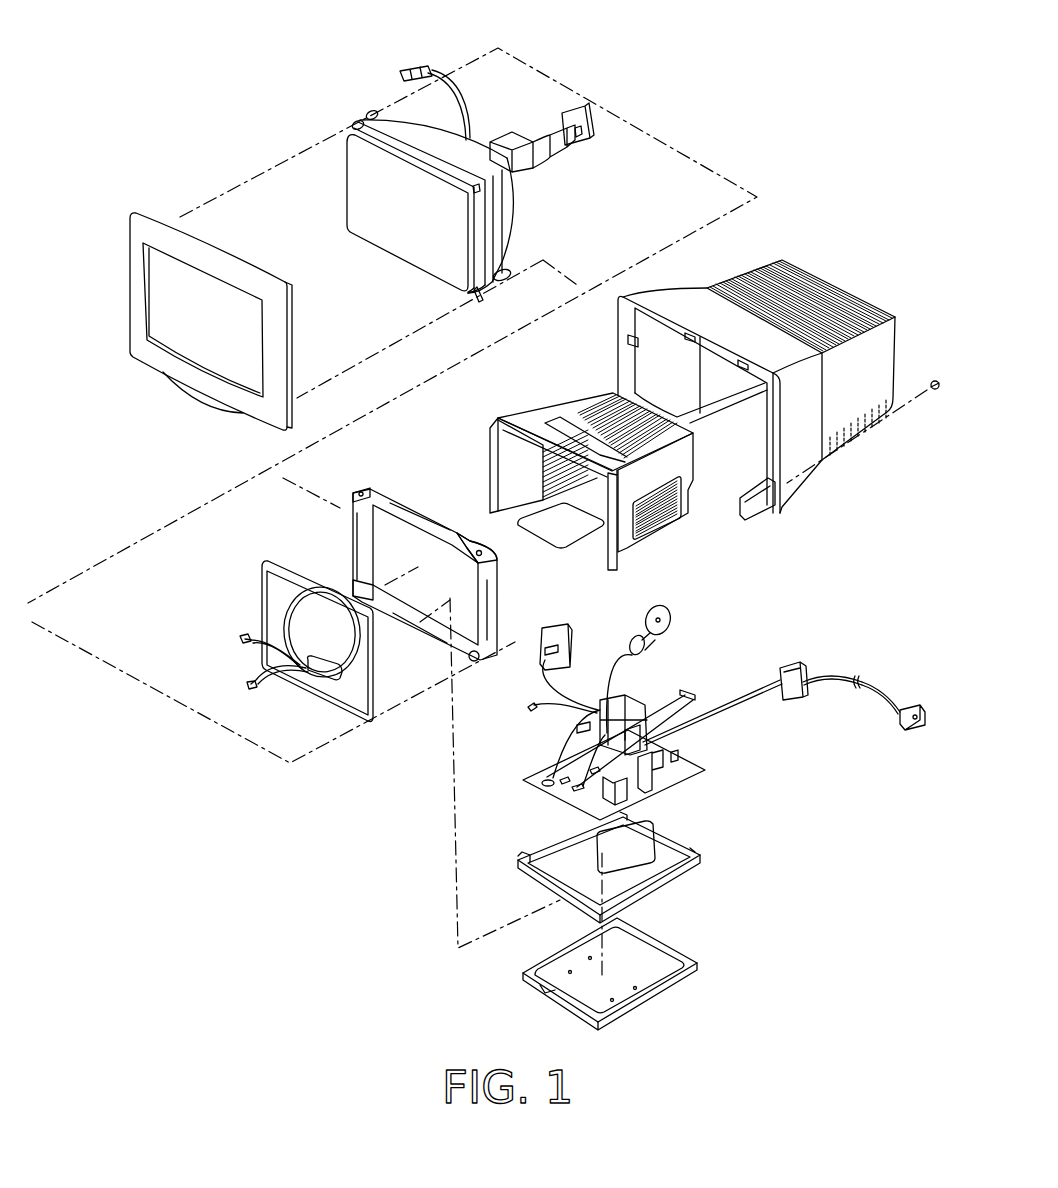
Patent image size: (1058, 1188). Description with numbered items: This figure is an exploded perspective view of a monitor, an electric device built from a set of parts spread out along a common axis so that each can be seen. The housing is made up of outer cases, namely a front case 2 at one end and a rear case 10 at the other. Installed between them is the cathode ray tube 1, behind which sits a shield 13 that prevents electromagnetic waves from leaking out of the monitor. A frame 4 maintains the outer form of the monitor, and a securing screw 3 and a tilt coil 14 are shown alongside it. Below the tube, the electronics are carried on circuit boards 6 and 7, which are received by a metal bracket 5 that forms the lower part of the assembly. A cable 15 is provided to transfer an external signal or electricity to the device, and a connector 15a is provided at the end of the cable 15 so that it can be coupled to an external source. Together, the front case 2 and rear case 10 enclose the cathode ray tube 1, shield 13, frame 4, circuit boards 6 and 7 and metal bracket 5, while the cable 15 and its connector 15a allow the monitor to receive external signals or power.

The cathode ray tube 1 is at (510, 124).
The front case 2 is at (172, 215).
The securing screw 3 is at (410, 466).
The frame 4 is at (463, 519).
The metal bracket 5 is at (704, 852).
The circuit board 6 is at (696, 758).
The circuit board 7 is at (584, 119).
The rear case 10 is at (856, 289).
The shield 13 is at (560, 420).
The tilt coil 14 is at (328, 716).
The cable 15 is at (832, 677).
The connector 15a is at (900, 717).